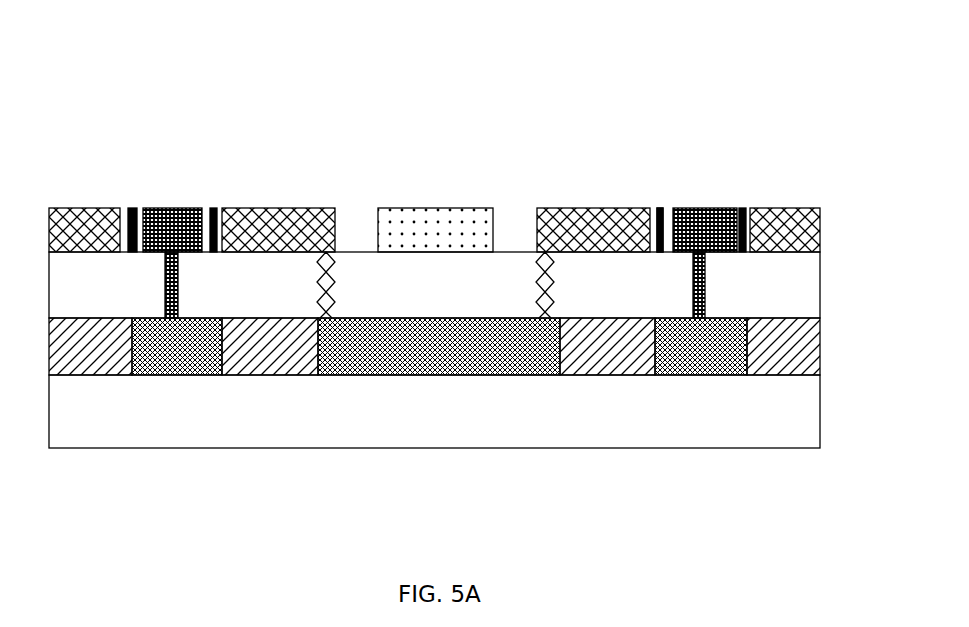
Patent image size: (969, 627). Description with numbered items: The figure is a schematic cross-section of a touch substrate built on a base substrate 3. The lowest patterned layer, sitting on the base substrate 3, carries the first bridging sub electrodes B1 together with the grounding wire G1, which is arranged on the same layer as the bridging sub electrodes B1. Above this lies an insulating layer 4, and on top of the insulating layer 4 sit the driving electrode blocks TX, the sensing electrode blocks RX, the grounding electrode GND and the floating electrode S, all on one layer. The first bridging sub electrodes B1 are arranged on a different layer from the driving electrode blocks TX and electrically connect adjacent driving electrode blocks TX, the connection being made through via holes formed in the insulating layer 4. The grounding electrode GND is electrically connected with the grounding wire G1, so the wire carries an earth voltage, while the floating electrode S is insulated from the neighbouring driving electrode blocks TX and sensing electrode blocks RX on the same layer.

The base substrate 3 is at (275, 428).
The insulating layer 4 is at (363, 277).
The grounding electrode GND is at (160, 208).
The floating electrode S is at (662, 212).
The driving electrode blocks TX is at (434, 230).
The sensing electrode blocks RX is at (435, 230).
The grounding wire G1 is at (439, 346).
The first bridging sub electrodes B1 is at (439, 346).